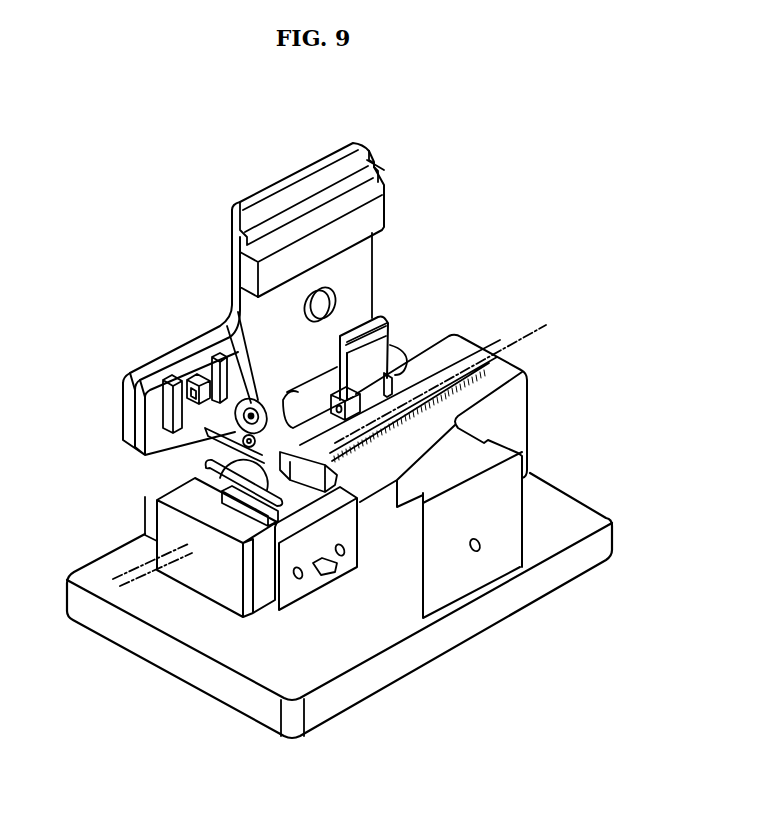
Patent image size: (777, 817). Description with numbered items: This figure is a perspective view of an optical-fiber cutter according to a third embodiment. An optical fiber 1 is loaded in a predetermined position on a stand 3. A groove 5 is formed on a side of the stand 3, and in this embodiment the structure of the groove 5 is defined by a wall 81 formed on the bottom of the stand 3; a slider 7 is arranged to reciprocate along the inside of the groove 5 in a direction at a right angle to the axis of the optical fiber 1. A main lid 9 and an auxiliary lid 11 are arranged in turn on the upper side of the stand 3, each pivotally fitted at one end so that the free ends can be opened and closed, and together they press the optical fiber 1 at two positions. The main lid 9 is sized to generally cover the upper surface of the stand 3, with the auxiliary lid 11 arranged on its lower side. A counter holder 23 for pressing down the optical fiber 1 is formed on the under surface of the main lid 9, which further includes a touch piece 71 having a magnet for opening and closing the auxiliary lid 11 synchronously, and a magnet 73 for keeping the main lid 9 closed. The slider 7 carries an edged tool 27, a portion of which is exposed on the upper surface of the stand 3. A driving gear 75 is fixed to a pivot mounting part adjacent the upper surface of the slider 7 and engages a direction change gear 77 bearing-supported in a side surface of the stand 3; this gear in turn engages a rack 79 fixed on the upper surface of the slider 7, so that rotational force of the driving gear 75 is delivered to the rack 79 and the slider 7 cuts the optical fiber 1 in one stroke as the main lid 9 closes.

The optical fiber 1 is at (534, 337).
The stand 3 is at (518, 400).
The groove 5 is at (341, 657).
The slider 7 is at (322, 586).
The main lid 9 is at (298, 188).
The auxiliary lid 11 is at (386, 319).
The counter holder 23 is at (187, 382).
The edged tool 27 is at (200, 476).
The touch piece 71 is at (335, 294).
The magnet 73 is at (387, 202).
The driving gear 75 is at (227, 327).
The direction change gear 77 is at (224, 371).
The rack 79 is at (235, 452).
The wall 81 is at (220, 597).